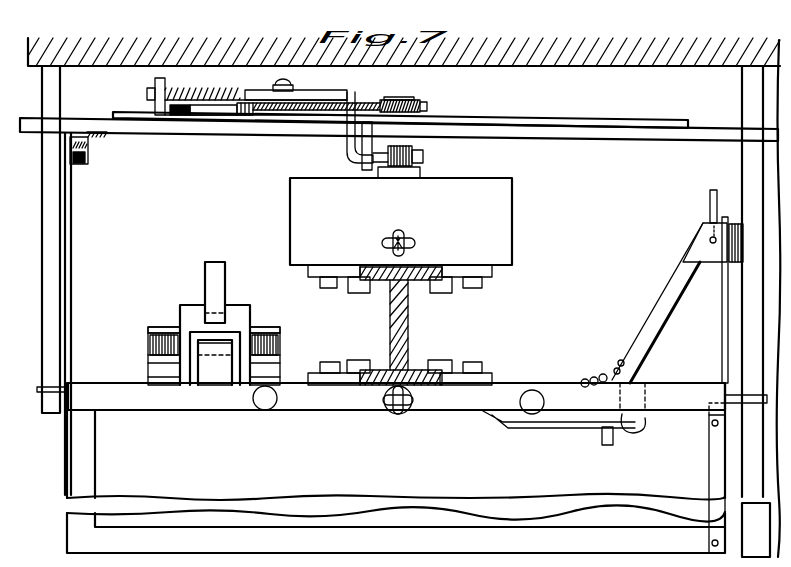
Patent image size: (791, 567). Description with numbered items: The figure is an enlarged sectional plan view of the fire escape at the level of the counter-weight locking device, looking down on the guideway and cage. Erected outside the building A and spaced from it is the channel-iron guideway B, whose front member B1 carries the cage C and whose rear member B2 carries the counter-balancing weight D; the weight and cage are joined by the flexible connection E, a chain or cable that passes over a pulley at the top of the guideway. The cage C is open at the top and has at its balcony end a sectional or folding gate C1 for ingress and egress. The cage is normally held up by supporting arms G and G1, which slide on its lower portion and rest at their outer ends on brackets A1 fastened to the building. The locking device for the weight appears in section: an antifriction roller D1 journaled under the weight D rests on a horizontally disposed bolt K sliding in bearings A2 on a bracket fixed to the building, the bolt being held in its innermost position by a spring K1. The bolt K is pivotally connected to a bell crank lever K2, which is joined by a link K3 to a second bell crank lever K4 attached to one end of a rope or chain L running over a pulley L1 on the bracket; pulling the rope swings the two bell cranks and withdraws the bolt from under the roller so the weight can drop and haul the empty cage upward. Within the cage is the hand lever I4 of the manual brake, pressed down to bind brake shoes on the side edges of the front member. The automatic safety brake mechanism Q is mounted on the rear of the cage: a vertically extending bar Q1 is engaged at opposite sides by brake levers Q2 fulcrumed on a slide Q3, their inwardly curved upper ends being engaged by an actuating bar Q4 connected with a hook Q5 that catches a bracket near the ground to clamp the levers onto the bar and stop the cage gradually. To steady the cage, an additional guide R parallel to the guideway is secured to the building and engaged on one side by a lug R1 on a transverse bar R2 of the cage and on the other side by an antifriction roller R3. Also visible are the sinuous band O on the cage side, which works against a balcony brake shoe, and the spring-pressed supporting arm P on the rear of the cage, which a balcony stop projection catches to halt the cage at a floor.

The building A is at (400, 85).
The brackets A1 is at (50, 325).
The bearings A2 is at (154, 85).
The transverse bar R2 is at (73, 270).
The spring K1 is at (200, 88).
The bolt K is at (347, 152).
The bell crank lever K2 is at (297, 88).
The link K3 is at (185, 116).
The bell crank lever K4 is at (248, 116).
The rope or chain L is at (316, 94).
The pulley L1 is at (427, 104).
The antifriction roller D1 is at (423, 155).
The lug R1 is at (77, 137).
The additional guide R is at (97, 138).
The antifriction roller R3 is at (86, 162).
The counter-balancing weight D is at (300, 205).
The flexible connection E is at (393, 236).
The rear member B2 is at (432, 267).
The guideway B is at (408, 330).
The front member B1 is at (431, 393).
The supporting arm G is at (757, 404).
The supporting arm G1 is at (40, 390).
The cage C is at (396, 468).
The sectional or folding gate C1 is at (703, 478).
The hand lever I4 is at (550, 423).
The brake mechanism Q is at (201, 335).
The hook Q5 is at (225, 287).
The vertically extending bar Q1 is at (217, 368).
The brake levers Q2 is at (149, 346).
The slide Q3 is at (162, 333).
The actuating bar Q4 is at (256, 333).
The spring-pressed supporting arm P is at (710, 213).
The sinuous band O is at (743, 243).